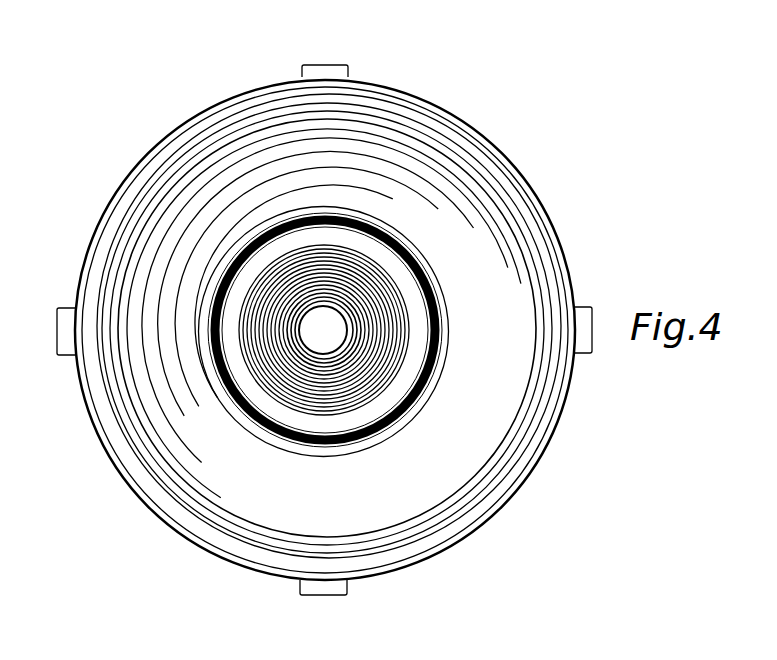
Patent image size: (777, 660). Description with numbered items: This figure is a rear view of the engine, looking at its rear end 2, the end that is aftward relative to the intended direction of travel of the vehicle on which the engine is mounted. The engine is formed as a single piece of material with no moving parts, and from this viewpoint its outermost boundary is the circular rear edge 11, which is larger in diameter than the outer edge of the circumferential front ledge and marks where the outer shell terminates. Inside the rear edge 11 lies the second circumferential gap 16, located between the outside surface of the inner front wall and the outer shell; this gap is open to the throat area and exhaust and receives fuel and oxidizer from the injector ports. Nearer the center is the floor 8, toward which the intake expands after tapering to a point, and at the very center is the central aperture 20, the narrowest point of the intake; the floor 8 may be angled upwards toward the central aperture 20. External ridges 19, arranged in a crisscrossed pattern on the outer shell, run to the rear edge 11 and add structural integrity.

The rear end 2 is at (94, 197).
The floor 8 is at (383, 408).
The rear edge 11 is at (222, 100).
The second circumferential gap 16 is at (280, 217).
The external ridges 19 is at (460, 110).
The central aperture 20 is at (332, 318).